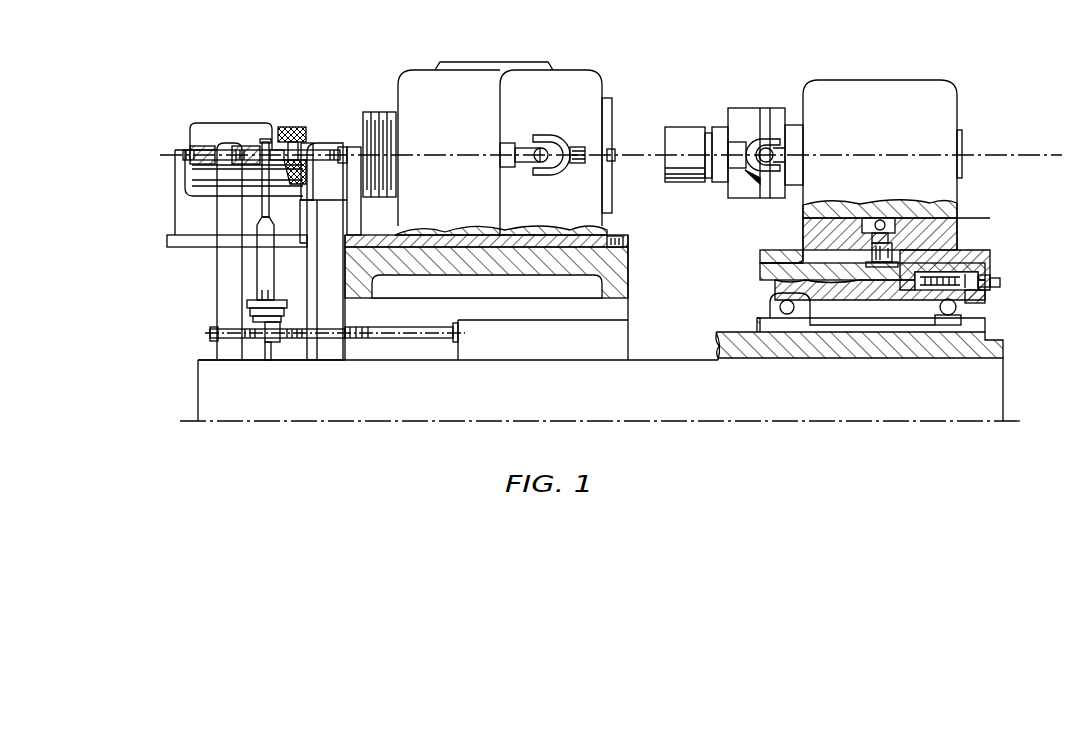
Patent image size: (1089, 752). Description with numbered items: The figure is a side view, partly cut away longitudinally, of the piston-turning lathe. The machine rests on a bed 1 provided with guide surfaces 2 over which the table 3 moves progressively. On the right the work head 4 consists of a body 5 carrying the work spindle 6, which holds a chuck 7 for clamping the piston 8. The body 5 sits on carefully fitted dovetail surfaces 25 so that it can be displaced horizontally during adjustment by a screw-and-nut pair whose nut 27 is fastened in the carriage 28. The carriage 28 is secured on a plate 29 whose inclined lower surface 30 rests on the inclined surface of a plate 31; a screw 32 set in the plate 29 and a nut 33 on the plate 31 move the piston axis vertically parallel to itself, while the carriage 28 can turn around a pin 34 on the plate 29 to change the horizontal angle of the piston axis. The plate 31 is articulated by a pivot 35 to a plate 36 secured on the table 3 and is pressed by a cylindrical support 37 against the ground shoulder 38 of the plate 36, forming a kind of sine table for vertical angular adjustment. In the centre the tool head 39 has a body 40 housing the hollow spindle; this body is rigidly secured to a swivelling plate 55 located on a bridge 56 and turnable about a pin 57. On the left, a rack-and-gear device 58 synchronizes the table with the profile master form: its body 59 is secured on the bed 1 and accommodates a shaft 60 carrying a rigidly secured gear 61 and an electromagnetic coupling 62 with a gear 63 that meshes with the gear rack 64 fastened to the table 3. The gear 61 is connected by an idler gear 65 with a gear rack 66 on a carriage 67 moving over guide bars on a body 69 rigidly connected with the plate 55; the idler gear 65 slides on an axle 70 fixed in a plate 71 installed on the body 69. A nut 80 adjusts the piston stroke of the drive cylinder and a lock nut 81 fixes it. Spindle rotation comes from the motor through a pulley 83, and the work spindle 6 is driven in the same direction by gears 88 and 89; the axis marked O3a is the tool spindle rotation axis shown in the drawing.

The bed 1 is at (958, 400).
The guide surfaces 2 is at (720, 355).
The table 3 is at (877, 349).
The work head 4 is at (918, 78).
The body 5 is at (952, 208).
The work spindle 6 is at (803, 128).
The chuck 7 is at (743, 117).
The piston 8 is at (683, 130).
The dovetail surfaces 25 is at (957, 222).
The nut 27 is at (882, 216).
The carriage 28 is at (950, 233).
The plate 29 is at (978, 267).
The inclined lower surface 30 is at (753, 278).
The plate 31 is at (776, 284).
The screw 32 is at (1000, 283).
The nut 33 is at (988, 297).
The pin 34 is at (870, 252).
The pivot 35 is at (786, 314).
The plate 36 is at (820, 326).
The cylindrical support 37 is at (947, 325).
The ground shoulder 38 is at (960, 315).
The tool head 39 is at (578, 70).
The body 40 is at (487, 83).
The plate 55 is at (573, 243).
The bridge 56 is at (615, 288).
The pin 57 is at (624, 241).
The rack-and-gear device 58 is at (314, 364).
The body 59 is at (336, 362).
The shaft 60 is at (262, 282).
The gear 61 is at (256, 148).
The electromagnetic coupling 62 is at (250, 310).
The gear 63 is at (245, 343).
The gear rack 64 is at (393, 340).
The idler gear 65 is at (297, 128).
The gear rack 66 is at (207, 148).
The carriage 67 is at (266, 126).
The body 69 is at (194, 238).
The axle 70 is at (300, 196).
The plate 71 is at (307, 187).
The nut 80 is at (303, 152).
The lock nut 81 is at (283, 130).
The pulley 83 is at (378, 112).
The gear 88 is at (546, 133).
The gear 89 is at (764, 130).
The axis O3a is at (613, 150).